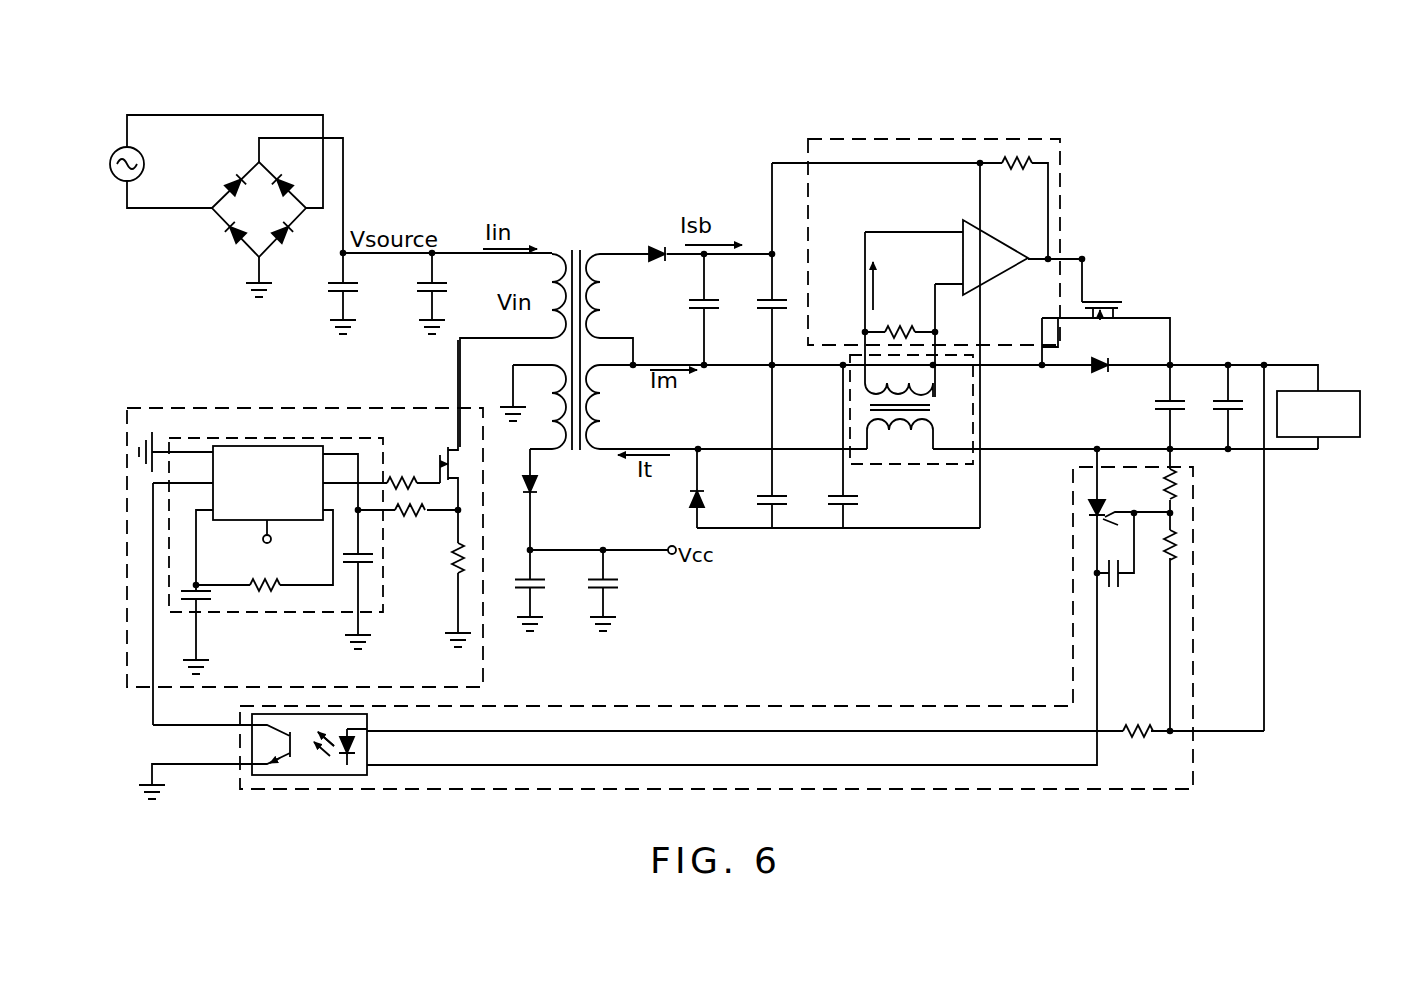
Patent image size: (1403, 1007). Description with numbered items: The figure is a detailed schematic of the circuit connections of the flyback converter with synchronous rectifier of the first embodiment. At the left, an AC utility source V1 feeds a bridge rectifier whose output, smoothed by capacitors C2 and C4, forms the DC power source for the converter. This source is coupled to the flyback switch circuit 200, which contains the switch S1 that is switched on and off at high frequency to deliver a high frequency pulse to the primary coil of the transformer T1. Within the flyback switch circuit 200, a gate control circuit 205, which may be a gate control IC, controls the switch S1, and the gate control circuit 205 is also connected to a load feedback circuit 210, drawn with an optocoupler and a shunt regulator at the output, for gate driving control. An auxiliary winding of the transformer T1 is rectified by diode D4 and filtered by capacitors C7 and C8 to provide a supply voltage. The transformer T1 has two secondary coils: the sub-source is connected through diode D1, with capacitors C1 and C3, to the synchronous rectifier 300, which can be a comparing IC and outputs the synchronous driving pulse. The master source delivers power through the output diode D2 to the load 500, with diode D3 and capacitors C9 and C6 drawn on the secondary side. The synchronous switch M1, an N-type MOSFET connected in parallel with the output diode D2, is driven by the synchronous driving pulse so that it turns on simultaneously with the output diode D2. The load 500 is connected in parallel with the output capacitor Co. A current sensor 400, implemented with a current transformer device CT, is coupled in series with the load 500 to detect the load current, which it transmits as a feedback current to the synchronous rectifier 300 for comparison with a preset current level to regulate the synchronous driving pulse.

The flyback switch circuit 200 is at (291, 532).
The gate control circuit 205 is at (365, 440).
The load feedback circuit 210 is at (860, 707).
The synchronous rectifier 300 is at (1013, 145).
The current sensor 400 is at (911, 435).
The load 500 is at (1355, 395).
The AC voltage source V1 is at (216, 161).
The input capacitor C2 is at (323, 293).
The input capacitor C4 is at (418, 293).
The transformer T1 is at (579, 336).
The switch S1 is at (443, 446).
The diode D1 is at (672, 267).
The capacitor C1 is at (692, 309).
The capacitor C3 is at (759, 264).
The capacitor C9 is at (758, 446).
The diode D3 is at (676, 488).
The capacitor C6 is at (831, 446).
The synchronous switch M1 is at (1115, 312).
The output diode D2 is at (1098, 377).
The CT device CT is at (915, 416).
The output capacitor Co is at (1182, 407).
The auxiliary diode D4 is at (549, 499).
The auxiliary capacitor C7 is at (540, 590).
The auxiliary capacitor C8 is at (611, 590).